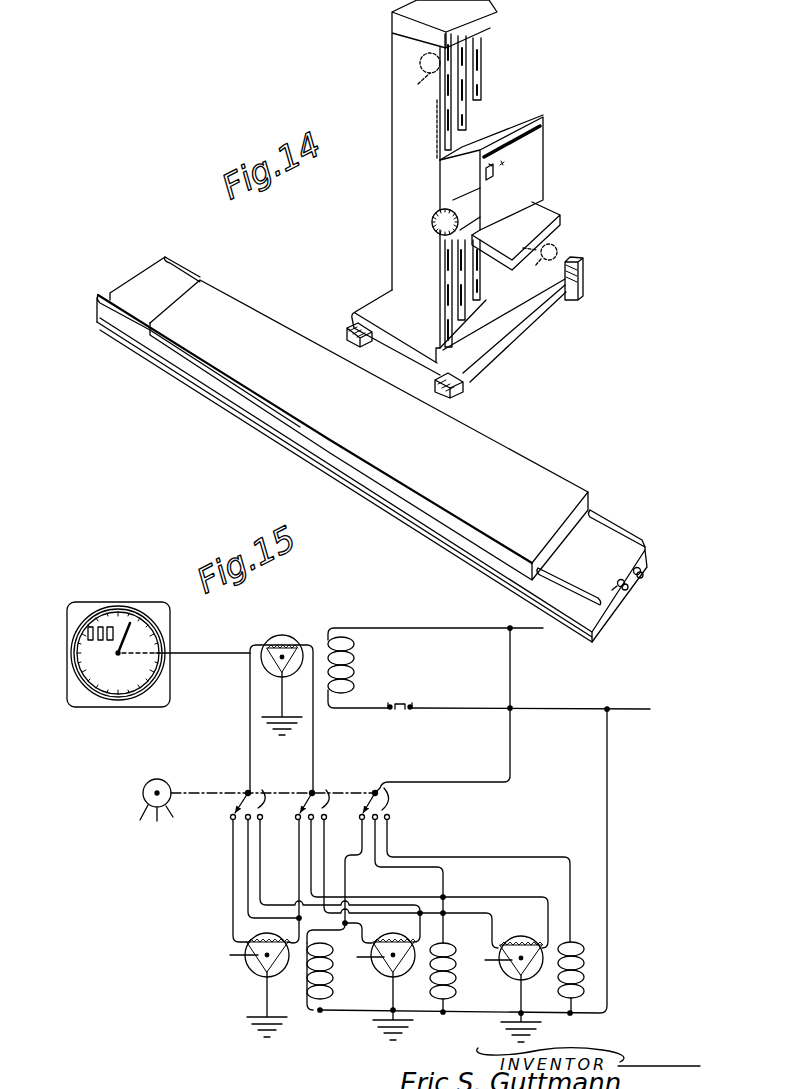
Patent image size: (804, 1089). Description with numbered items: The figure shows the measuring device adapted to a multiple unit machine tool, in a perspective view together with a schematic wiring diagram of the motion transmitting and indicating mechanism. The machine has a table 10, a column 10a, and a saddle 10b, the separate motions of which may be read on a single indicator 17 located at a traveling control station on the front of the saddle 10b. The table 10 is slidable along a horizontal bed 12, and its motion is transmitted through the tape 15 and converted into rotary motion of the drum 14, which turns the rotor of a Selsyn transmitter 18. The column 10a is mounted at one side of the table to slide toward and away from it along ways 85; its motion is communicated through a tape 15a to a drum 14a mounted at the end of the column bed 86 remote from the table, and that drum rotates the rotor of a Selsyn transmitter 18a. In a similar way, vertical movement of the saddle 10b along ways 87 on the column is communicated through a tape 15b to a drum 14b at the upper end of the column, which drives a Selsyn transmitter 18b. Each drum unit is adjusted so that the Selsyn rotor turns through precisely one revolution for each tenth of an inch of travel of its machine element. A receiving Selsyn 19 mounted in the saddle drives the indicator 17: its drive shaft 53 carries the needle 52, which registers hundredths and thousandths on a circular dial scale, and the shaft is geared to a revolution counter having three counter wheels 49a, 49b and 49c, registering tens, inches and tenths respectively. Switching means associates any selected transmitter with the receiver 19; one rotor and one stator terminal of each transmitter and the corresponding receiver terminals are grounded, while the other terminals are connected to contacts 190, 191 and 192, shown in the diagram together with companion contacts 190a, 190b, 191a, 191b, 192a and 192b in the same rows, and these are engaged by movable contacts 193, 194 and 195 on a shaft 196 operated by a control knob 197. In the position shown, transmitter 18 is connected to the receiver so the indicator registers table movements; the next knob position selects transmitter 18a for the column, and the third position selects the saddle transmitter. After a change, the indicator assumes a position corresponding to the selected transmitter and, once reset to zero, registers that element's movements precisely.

In FIG. 14, the table 10 is at (272, 404).
In FIG. 14, the column 10a is at (395, 221).
In FIG. 14, the saddle 10b is at (495, 115).
In FIG. 14, the bed 12 is at (410, 522).
In FIG. 14, the drum 14 is at (628, 589).
In FIG. 14, the drum 14a is at (557, 253).
In FIG. 14, the drum 14b is at (413, 83).
In FIG. 14, the tape 15 is at (594, 560).
In FIG. 14, the tape 15a is at (545, 262).
In FIG. 14, the tape 15b is at (437, 110).
In FIG. 14, the indicator 17 is at (495, 180).
In FIG. 15, the indicator 17 is at (78, 712).
In FIG. 14, the Selsyn transmitter 18 is at (643, 573).
In FIG. 15, the Selsyn transmitter 18 is at (246, 968).
In FIG. 14, the Selsyn transmitter 18a is at (551, 245).
In FIG. 15, the Selsyn transmitter 18a is at (375, 970).
In FIG. 14, the Selsyn transmitter 18b is at (420, 55).
In FIG. 15, the Selsyn transmitter 18b is at (506, 978).
In FIG. 15, the Selsyn receiver 19 is at (289, 634).
In FIG. 15, the counter wheel 49a is at (87, 630).
In FIG. 15, the counter wheel 49b is at (101, 626).
In FIG. 15, the counter wheel 49c is at (112, 626).
In FIG. 15, the needle 52 is at (130, 630).
In FIG. 15, the drive shaft 53 is at (196, 653).
In FIG. 14, the ways 85 is at (348, 342).
In FIG. 14, the column bed 86 is at (580, 290).
In FIG. 14, the ways 87 is at (462, 296).
In FIG. 15, the contact 190 is at (230, 816).
In FIG. 15, the switch contact 190a is at (246, 820).
In FIG. 15, the switch contact 190b is at (258, 822).
In FIG. 15, the contact 191 is at (282, 875).
In FIG. 15, the switch contact 191a is at (310, 820).
In FIG. 15, the switch contact 191b is at (322, 822).
In FIG. 15, the contact 192 is at (339, 876).
In FIG. 15, the switch contact 192a is at (380, 818).
In FIG. 15, the switch contact 192b is at (390, 819).
In FIG. 15, the movable contact 193 is at (256, 792).
In FIG. 15, the movable contact 194 is at (320, 791).
In FIG. 15, the movable contact 195 is at (370, 787).
In FIG. 15, the shaft 196 is at (210, 790).
In FIG. 14, the control knob 197 is at (530, 157).
In FIG. 15, the control knob 197 is at (178, 772).